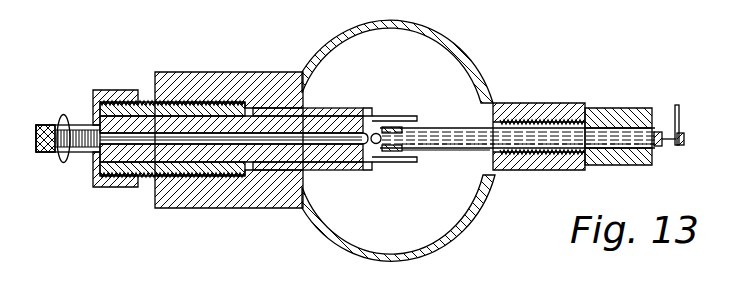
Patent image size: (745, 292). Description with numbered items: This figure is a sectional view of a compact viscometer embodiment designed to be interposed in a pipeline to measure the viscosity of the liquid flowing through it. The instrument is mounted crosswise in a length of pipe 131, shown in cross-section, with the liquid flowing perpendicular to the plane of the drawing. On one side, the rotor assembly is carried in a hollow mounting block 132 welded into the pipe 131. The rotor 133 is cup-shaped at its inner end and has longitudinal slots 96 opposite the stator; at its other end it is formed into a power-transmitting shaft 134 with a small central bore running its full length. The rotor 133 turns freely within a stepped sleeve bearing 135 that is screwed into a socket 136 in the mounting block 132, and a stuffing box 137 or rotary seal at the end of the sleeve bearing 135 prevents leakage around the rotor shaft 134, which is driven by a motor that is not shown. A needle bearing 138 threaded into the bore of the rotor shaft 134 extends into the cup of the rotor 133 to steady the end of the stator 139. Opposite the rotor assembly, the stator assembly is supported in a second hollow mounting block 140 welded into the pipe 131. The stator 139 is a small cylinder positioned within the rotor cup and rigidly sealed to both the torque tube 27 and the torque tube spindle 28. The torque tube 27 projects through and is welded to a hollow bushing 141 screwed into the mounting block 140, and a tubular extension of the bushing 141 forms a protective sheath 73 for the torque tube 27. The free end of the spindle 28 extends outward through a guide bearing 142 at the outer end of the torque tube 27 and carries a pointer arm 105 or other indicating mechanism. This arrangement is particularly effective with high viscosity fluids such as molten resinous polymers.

The pipe 131 is at (462, 45).
The hollow mounting block 132 is at (265, 192).
The rotor 133 is at (370, 117).
The power-transmitting shaft 134 is at (223, 150).
The stepped sleeve bearing 135 is at (193, 115).
The socket 136 is at (182, 107).
The stuffing box 137 is at (102, 86).
The needle bearing 138 is at (98, 132).
The stator 139 is at (385, 127).
The second hollow mounting block 140 is at (550, 113).
The hollow bushing 141 is at (612, 113).
The guide bearing 142 is at (658, 133).
The pointer arm 105 is at (680, 132).
The torque tube spindle 28 is at (470, 130).
The torque tube 27 is at (458, 143).
The protective sheath 73 is at (443, 152).
The longitudinal slots 96 is at (387, 162).